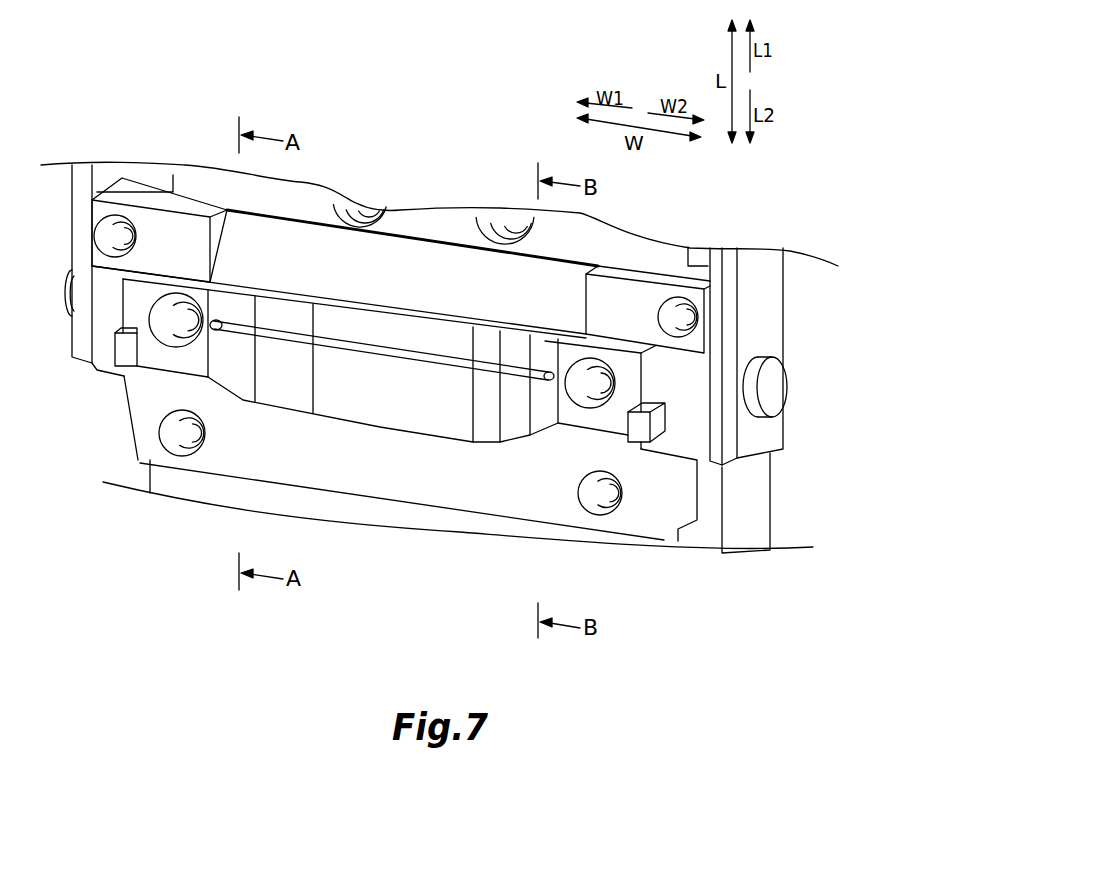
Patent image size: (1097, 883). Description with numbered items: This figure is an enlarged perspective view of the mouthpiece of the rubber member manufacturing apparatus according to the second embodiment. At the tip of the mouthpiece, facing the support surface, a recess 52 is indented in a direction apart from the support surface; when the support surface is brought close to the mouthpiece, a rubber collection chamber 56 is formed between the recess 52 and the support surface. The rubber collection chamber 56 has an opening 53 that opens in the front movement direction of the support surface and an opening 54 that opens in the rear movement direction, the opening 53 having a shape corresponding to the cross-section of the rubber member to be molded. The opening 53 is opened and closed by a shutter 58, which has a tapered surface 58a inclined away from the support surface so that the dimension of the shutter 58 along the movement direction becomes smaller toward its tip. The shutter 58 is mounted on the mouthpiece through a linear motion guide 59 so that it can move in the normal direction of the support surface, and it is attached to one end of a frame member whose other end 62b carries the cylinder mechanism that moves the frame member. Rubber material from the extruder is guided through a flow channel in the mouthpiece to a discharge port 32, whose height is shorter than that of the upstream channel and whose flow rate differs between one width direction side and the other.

The discharge port 32 is at (367, 362).
The recess 52 is at (337, 393).
The opening 53 is at (483, 330).
The opening 54 is at (408, 435).
The rubber collection chamber 56 is at (443, 390).
The shutter 58 is at (172, 243).
The tapered surface 58a is at (417, 293).
The linear motion guide 59 is at (124, 352).
The other end of the frame member 62b is at (83, 337).